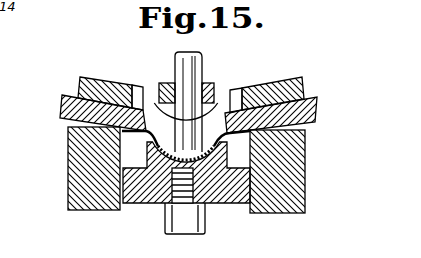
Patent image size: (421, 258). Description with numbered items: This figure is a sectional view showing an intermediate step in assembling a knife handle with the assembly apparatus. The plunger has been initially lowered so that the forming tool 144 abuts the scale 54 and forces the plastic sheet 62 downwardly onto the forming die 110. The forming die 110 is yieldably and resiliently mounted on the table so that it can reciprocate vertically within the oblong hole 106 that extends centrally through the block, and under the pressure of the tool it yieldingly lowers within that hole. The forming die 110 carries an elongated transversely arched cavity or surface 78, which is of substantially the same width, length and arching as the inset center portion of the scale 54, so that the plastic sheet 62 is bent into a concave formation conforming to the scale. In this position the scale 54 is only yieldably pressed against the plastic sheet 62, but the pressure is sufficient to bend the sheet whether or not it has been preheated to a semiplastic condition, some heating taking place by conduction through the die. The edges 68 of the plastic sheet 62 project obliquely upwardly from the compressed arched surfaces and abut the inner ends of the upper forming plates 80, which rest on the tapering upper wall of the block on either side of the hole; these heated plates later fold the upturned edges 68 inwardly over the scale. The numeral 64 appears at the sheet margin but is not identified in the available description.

The upper forming plates 80 is at (100, 110).
The edges 68 is at (118, 142).
The plastic sheet 62 is at (146, 156).
The forming die 110 is at (147, 203).
The oblong hole 106 is at (142, 161).
The forming tool 144 is at (213, 84).
The scale 54 is at (207, 145).
The transversely arched cavity 78 is at (204, 148).
The support 64 is at (254, 253).